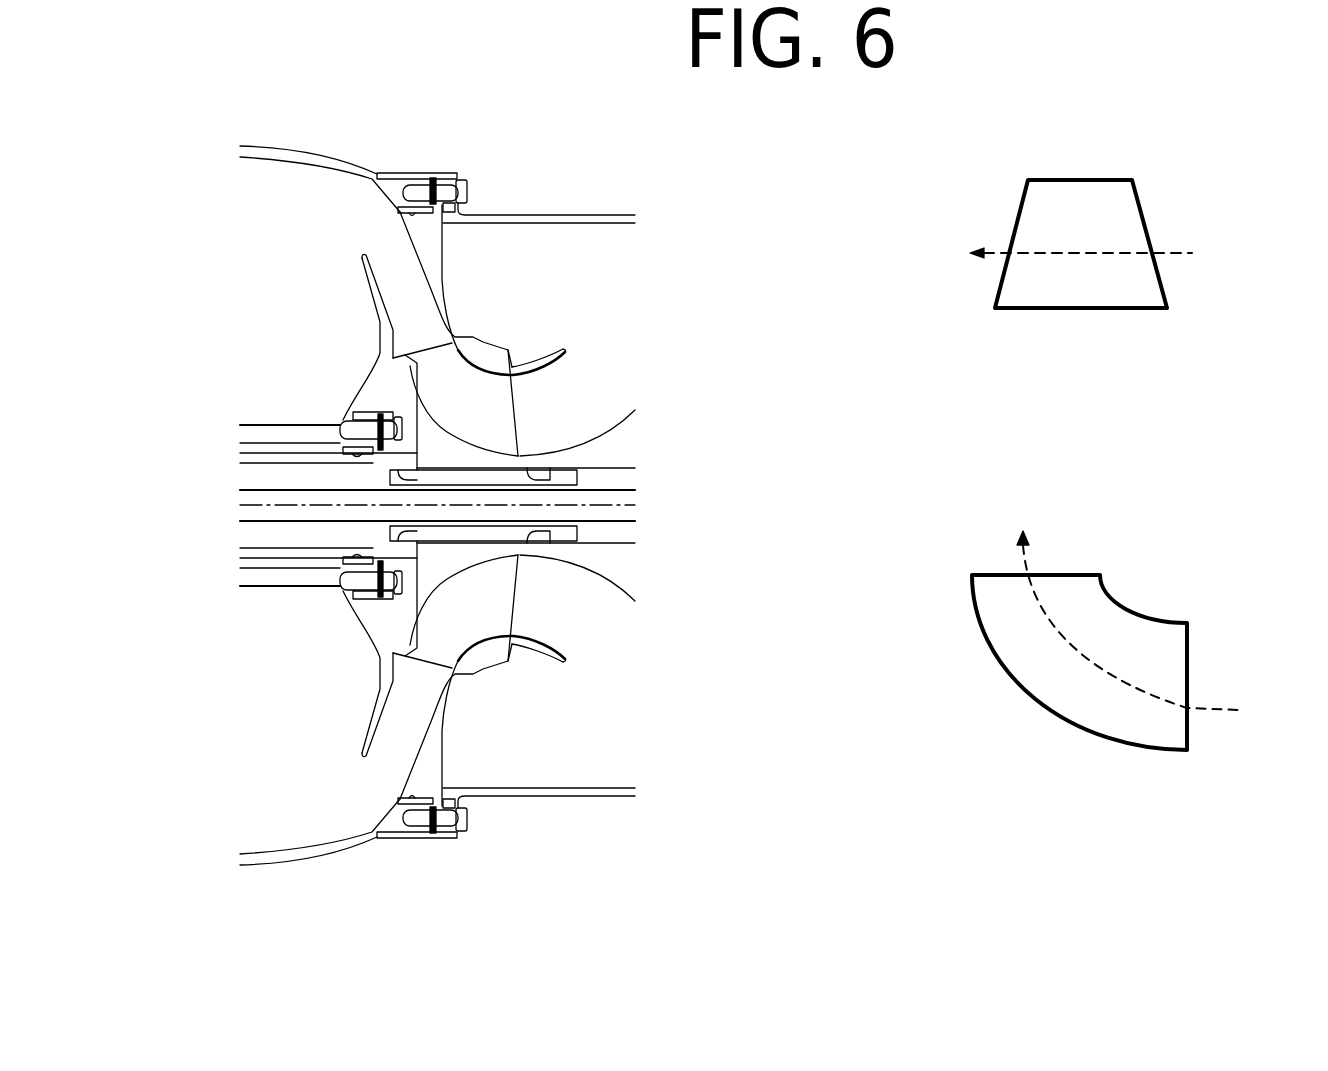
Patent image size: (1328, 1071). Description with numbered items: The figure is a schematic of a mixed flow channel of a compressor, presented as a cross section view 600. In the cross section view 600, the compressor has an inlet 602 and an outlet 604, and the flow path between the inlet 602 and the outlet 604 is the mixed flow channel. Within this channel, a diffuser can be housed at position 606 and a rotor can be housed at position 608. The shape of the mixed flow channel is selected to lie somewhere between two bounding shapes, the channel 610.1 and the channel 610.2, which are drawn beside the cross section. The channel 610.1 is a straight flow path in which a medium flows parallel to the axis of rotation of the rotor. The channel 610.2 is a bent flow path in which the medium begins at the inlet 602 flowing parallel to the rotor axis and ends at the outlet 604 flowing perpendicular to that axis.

The cross section view 600 is at (437, 506).
The inlet 602 is at (937, 481).
The outlet 604 is at (743, 473).
The diffuser position 606 is at (402, 745).
The rotor position 608 is at (465, 375).
The channel 610.1 is at (1117, 368).
The channel 610.2 is at (1138, 808).